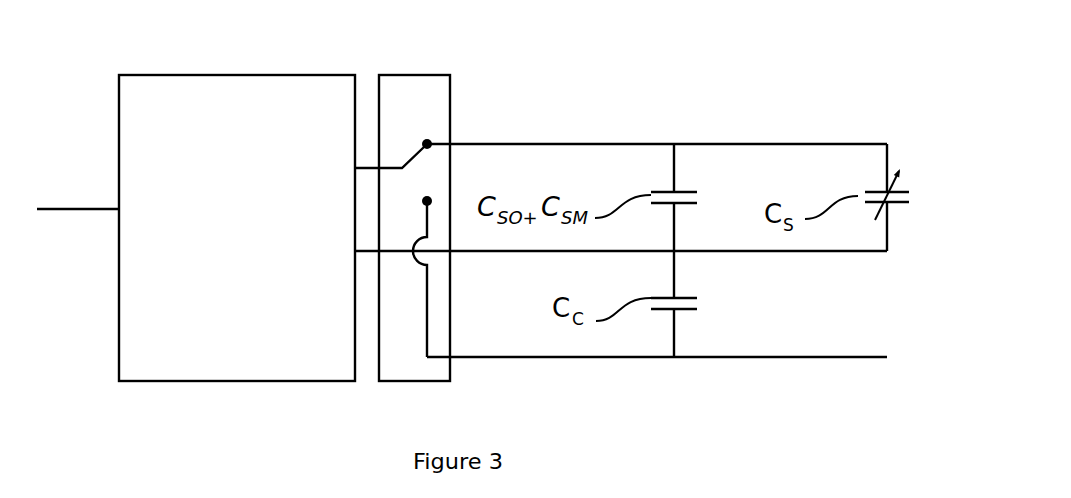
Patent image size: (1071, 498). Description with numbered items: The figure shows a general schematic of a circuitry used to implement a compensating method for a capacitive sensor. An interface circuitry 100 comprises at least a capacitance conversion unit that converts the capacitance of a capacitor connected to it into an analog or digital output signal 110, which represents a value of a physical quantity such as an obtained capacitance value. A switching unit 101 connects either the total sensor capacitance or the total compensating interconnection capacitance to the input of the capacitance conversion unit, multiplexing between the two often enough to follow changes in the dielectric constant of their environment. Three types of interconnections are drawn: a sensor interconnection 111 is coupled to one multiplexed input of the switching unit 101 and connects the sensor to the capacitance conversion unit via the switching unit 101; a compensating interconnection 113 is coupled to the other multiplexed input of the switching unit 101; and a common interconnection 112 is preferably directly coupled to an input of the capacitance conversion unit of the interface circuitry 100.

The interface circuitry 100 is at (166, 91).
The switching unit 101 is at (412, 93).
The output signal 110 is at (100, 211).
The sensor interconnection 111 is at (714, 144).
The common interconnection 112 is at (765, 251).
The compensating interconnection 113 is at (634, 357).